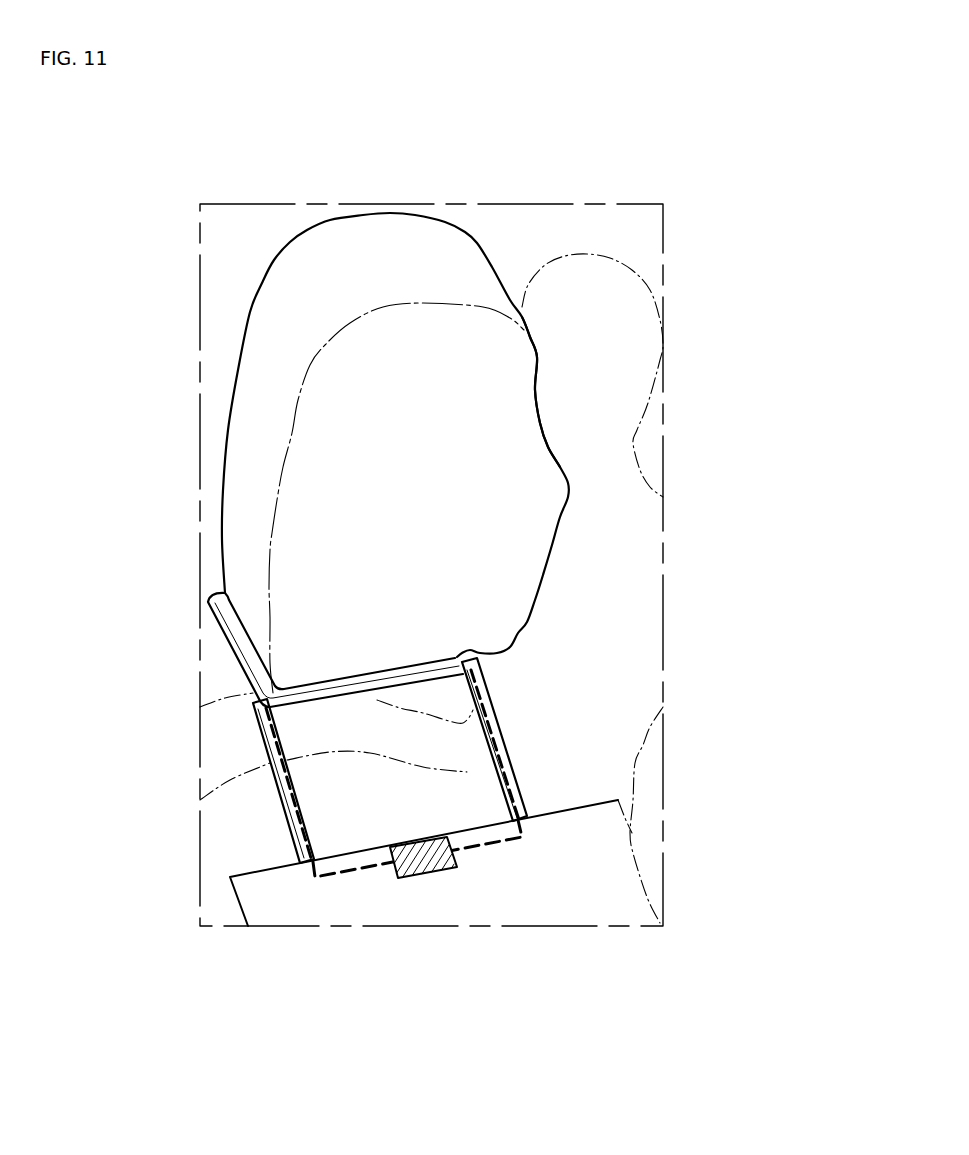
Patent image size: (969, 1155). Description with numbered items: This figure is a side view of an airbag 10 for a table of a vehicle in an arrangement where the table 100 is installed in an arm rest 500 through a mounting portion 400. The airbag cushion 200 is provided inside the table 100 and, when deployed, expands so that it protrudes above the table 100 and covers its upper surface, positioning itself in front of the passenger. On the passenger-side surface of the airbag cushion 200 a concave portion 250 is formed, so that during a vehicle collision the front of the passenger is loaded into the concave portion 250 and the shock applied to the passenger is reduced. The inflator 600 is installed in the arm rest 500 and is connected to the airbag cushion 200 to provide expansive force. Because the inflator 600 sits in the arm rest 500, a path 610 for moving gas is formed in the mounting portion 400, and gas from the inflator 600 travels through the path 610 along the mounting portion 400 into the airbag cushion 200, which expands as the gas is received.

The airbag for a table of a vehicle 10 is at (166, 183).
The table 100 is at (233, 632).
The airbag cushion 200 is at (393, 228).
The concave portion 250 is at (537, 392).
The mounting portion 400 is at (253, 740).
The arm rest 500 is at (250, 900).
The inflator 600 is at (420, 878).
The path 610 is at (492, 847).